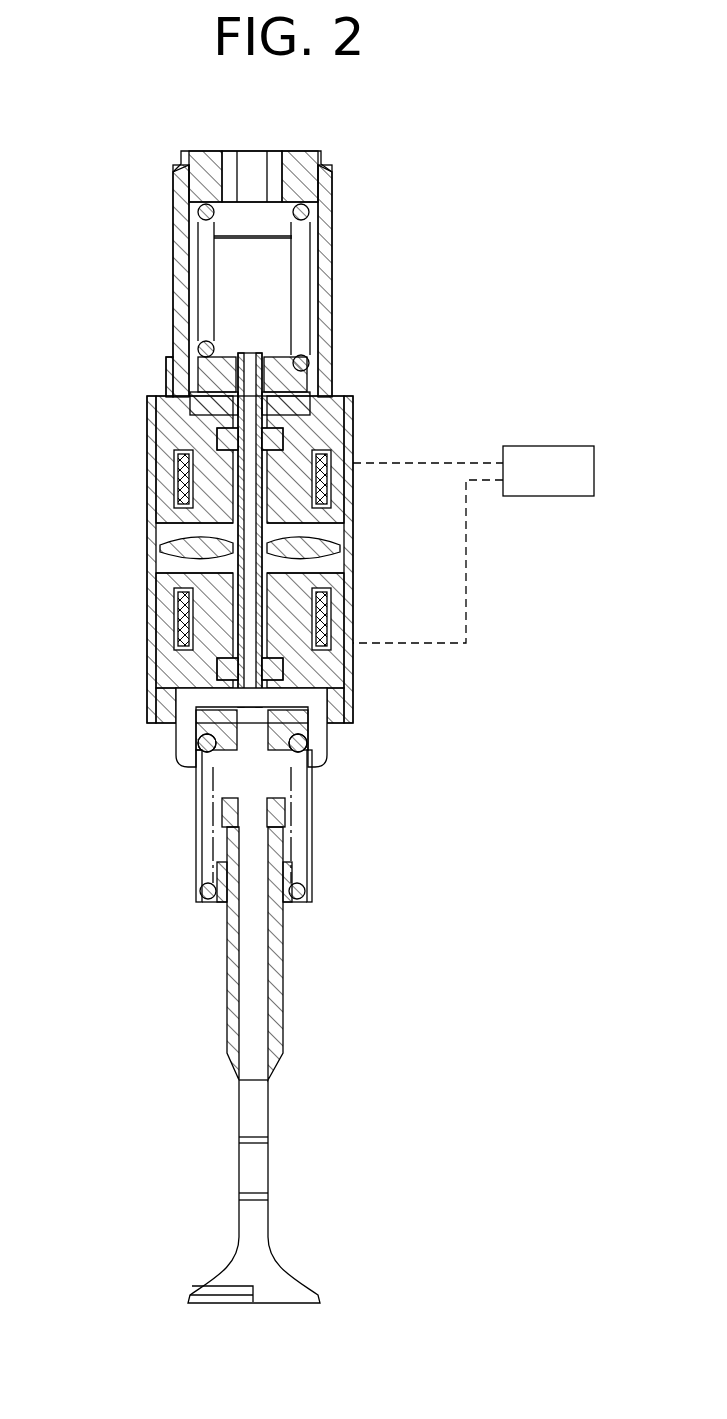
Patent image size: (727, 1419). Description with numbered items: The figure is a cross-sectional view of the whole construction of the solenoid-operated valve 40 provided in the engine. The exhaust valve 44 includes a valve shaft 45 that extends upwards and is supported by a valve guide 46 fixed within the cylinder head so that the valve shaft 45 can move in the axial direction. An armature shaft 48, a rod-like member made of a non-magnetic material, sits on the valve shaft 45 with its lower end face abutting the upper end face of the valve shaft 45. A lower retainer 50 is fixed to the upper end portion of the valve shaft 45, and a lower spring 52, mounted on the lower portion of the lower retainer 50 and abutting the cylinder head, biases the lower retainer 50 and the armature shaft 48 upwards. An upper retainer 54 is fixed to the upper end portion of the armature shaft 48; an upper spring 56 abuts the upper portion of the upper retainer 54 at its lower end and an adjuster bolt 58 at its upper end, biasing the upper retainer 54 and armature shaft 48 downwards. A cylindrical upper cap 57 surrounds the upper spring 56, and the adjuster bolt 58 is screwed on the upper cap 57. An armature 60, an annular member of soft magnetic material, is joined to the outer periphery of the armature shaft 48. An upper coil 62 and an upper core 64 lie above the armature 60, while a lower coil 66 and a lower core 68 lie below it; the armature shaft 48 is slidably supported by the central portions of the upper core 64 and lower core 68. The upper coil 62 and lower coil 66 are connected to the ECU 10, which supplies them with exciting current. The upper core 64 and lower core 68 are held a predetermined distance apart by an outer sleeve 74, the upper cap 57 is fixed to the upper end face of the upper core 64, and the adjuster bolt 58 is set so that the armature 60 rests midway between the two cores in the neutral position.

The ECU 10 is at (575, 446).
The solenoid-operated valve 40 is at (352, 243).
The exhaust valve 44 is at (252, 1247).
The valve shaft 45 is at (250, 1118).
The valve guide 46 is at (233, 984).
The armature shaft 48 is at (353, 562).
The lower retainer 50 is at (308, 728).
The lower spring 52 is at (312, 805).
The upper retainer 54 is at (310, 386).
The upper spring 56 is at (308, 305).
The upper cap 57 is at (180, 313).
The adjuster bolt 58 is at (297, 158).
The armature 60 is at (170, 548).
The upper coil 62 is at (182, 480).
The upper core 64 is at (345, 413).
The lower coil 66 is at (178, 627).
The lower core 68 is at (355, 690).
The outer sleeve 74 is at (150, 558).